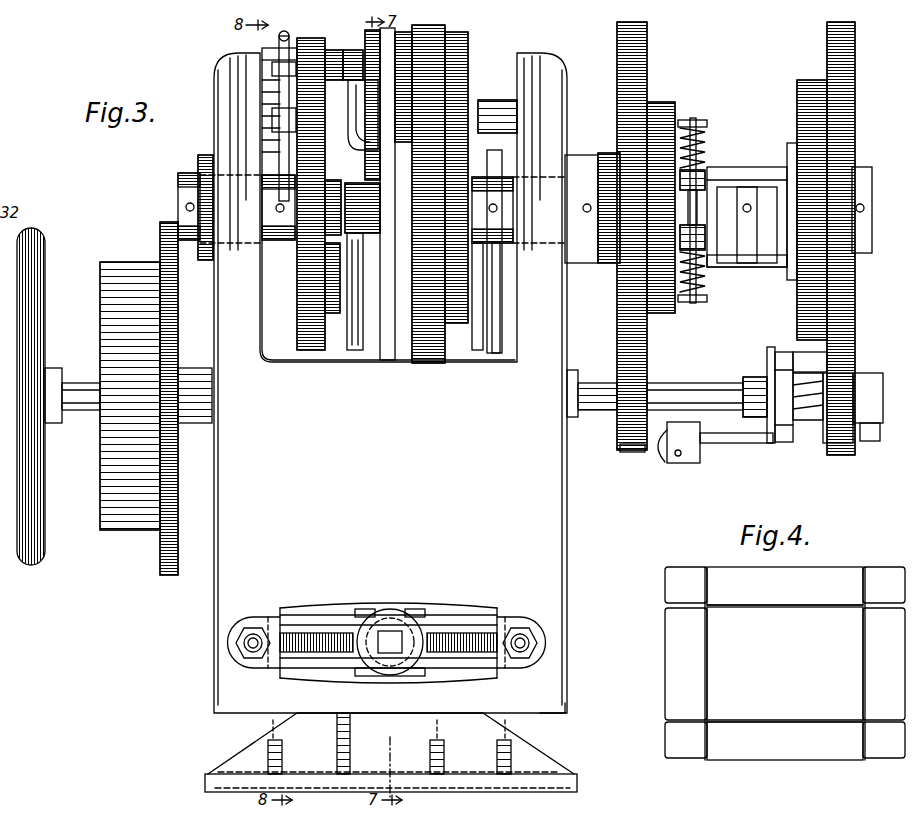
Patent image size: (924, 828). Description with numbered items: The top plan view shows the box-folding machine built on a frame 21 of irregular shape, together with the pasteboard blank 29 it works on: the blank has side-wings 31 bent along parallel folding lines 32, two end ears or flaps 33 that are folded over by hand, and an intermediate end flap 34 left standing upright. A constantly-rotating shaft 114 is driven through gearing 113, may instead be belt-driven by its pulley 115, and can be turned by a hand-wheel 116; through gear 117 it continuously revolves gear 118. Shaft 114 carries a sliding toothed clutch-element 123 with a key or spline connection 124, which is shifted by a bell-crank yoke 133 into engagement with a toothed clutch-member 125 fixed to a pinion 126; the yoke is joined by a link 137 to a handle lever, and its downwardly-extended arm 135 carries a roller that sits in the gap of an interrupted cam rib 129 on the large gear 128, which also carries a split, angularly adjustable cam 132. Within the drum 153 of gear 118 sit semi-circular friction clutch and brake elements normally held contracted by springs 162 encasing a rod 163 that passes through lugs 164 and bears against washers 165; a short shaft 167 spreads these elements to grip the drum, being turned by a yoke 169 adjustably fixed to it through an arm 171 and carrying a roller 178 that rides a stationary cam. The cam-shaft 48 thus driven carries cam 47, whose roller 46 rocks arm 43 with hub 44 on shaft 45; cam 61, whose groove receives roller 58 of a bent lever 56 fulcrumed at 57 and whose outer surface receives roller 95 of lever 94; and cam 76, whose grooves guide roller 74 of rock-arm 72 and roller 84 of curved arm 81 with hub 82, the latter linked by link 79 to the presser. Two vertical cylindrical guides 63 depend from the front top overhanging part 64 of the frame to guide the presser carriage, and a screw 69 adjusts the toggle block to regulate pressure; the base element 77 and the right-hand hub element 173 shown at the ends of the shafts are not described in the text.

In FIG. 3, the frame 21 is at (546, 596).
In FIG. 3, the hub 44 is at (292, 138).
In FIG. 3, the front top overhanging part 64 is at (560, 708).
In FIG. 3, the base plate 77 is at (466, 790).
In FIG. 3, the screw 69 is at (405, 628).
In FIG. 3, the vertical cylindrical guides 63 is at (243, 646).
In FIG. 3, the hand-wheel 116 is at (32, 562).
In FIG. 3, the shaft 114 is at (78, 410).
In FIG. 3, the pulley 115 is at (112, 530).
In FIG. 3, the gearing 113 is at (162, 562).
In FIG. 3, the fulcrum 57 is at (262, 113).
In FIG. 3, the roller 58 is at (296, 34).
In FIG. 3, the bent lever 56 is at (268, 52).
In FIG. 3, the cam 61 is at (311, 194).
In FIG. 3, the roller 95 is at (333, 50).
In FIG. 3, the cam 47 is at (328, 228).
In FIG. 3, the roller 46 is at (326, 275).
In FIG. 3, the rock-arm 72 is at (355, 50).
In FIG. 3, the lever 94 is at (364, 130).
In FIG. 3, the rotary shaft 48 is at (362, 208).
In FIG. 3, the arm 43 is at (372, 292).
In FIG. 3, the cam 76 is at (408, 194).
In FIG. 3, the roller 74 is at (470, 42).
In FIG. 3, the shaft 45 is at (494, 102).
In FIG. 3, the hub 82 is at (490, 180).
In FIG. 3, the roller 84 is at (474, 335).
In FIG. 3, the link 79 is at (496, 356).
In FIG. 3, the curved arm 81 is at (560, 268).
In FIG. 3, the gear 118 is at (640, 62).
In FIG. 3, the gear 117 is at (632, 455).
In FIG. 3, the drum 153 is at (670, 106).
In FIG. 3, the short shaft 167 is at (700, 170).
In FIG. 3, the washers 165 is at (692, 130).
In FIG. 3, the springs 162 is at (704, 140).
In FIG. 3, the lugs 164 is at (681, 181).
In FIG. 3, the rod 163 is at (688, 207).
In FIG. 3, the yoke 169 is at (762, 270).
In FIG. 3, the arm 171 is at (746, 190).
In FIG. 3, the roller 178 is at (732, 270).
In FIG. 3, the cam 132 is at (790, 143).
In FIG. 3, the cam rib 129 is at (808, 82).
In FIG. 3, the large gear 128 is at (856, 118).
In FIG. 3, the hub 173 is at (856, 270).
In FIG. 3, the key or spline connection 124 is at (722, 385).
In FIG. 3, the bell-crank yoke 133 is at (772, 350).
In FIG. 3, the sliding toothed clutch-element 123 is at (825, 398).
In FIG. 3, the downwardly-extended arm 135 is at (832, 360).
In FIG. 3, the toothed clutch-member 125 is at (826, 445).
In FIG. 3, the pinion 126 is at (860, 450).
In FIG. 3, the link 137 is at (680, 464).
In FIG. 4, the pasteboard blank 29 is at (785, 664).
In FIG. 4, the side-wings 31 is at (785, 663).
In FIG. 4, the folding lines 32 is at (815, 607).
In FIG. 4, the end ears or flaps 33 is at (688, 572).
In FIG. 4, the intermediate end flap 34 is at (785, 663).